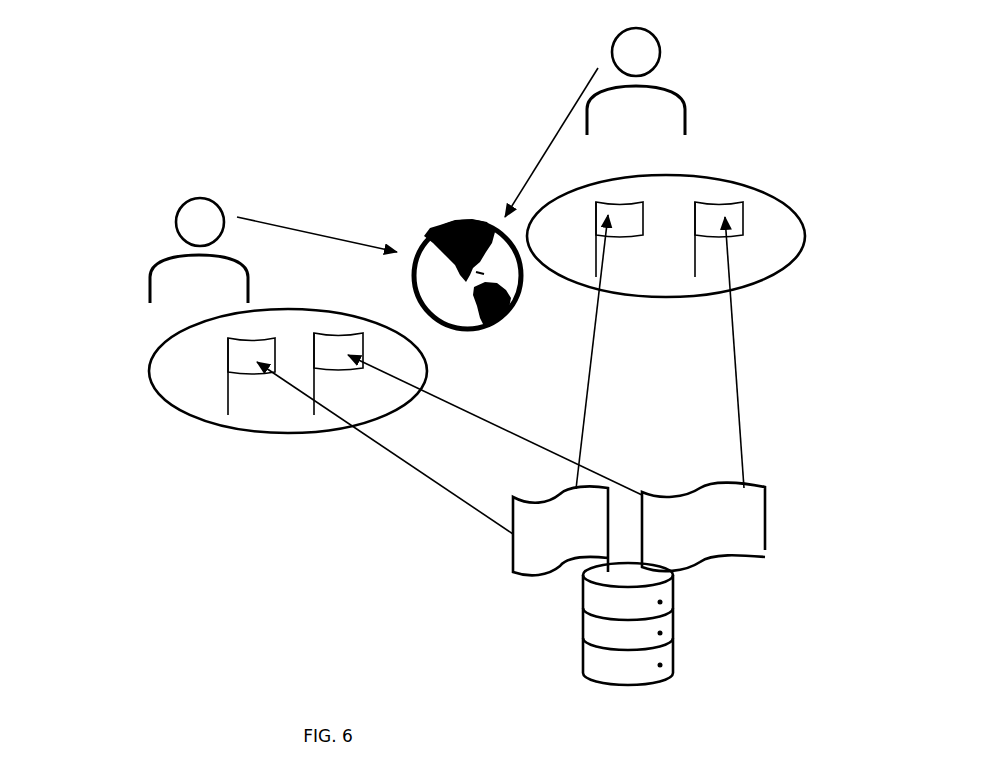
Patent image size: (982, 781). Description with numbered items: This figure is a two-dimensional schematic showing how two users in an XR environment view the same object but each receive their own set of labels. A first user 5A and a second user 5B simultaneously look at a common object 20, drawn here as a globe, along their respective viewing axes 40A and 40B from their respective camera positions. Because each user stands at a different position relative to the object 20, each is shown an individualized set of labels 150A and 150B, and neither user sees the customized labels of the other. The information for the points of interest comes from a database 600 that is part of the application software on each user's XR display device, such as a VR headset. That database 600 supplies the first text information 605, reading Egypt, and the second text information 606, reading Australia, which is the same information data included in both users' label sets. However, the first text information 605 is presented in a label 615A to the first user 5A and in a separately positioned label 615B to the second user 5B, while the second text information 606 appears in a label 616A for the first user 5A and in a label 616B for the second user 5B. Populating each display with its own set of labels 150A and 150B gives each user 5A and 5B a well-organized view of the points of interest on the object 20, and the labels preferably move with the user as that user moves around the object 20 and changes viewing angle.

The first user 5A is at (175, 223).
The second user 5B is at (685, 108).
The viewing axis 40A is at (305, 235).
The viewing axis 40B is at (543, 157).
The object 20 is at (463, 217).
The set of labels 150A is at (150, 358).
The set of labels 150B is at (767, 193).
The label 615A is at (228, 373).
The label 616A is at (363, 345).
The label 615B is at (632, 230).
The label 616B is at (743, 228).
The first text information 605 is at (515, 562).
The second text information 606 is at (758, 545).
The database 600 is at (632, 663).